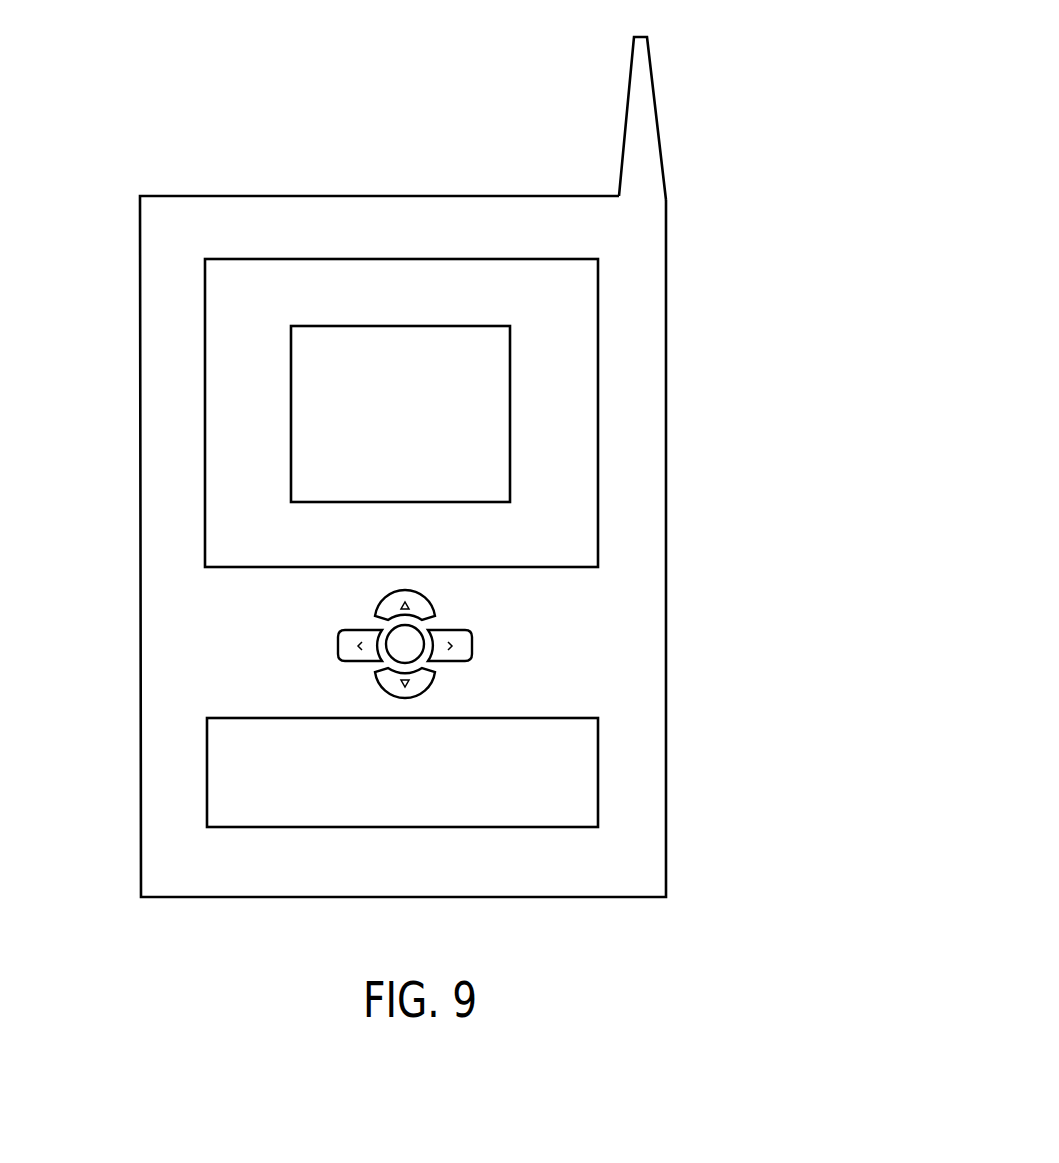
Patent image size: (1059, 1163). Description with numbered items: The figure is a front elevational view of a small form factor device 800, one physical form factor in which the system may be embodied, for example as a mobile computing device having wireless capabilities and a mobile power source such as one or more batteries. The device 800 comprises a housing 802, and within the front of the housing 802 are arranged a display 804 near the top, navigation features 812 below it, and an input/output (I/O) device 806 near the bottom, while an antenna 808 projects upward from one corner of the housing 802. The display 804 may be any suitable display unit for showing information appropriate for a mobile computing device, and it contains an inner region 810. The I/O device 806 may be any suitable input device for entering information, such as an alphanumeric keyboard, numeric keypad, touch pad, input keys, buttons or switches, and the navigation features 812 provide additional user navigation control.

The device 800 is at (136, 134).
The housing 802 is at (140, 635).
The display 804 is at (598, 316).
The input/output (I/O) device 806 is at (599, 772).
The antenna 808 is at (626, 116).
The display window 810 is at (403, 326).
The navigation features 812 is at (506, 645).